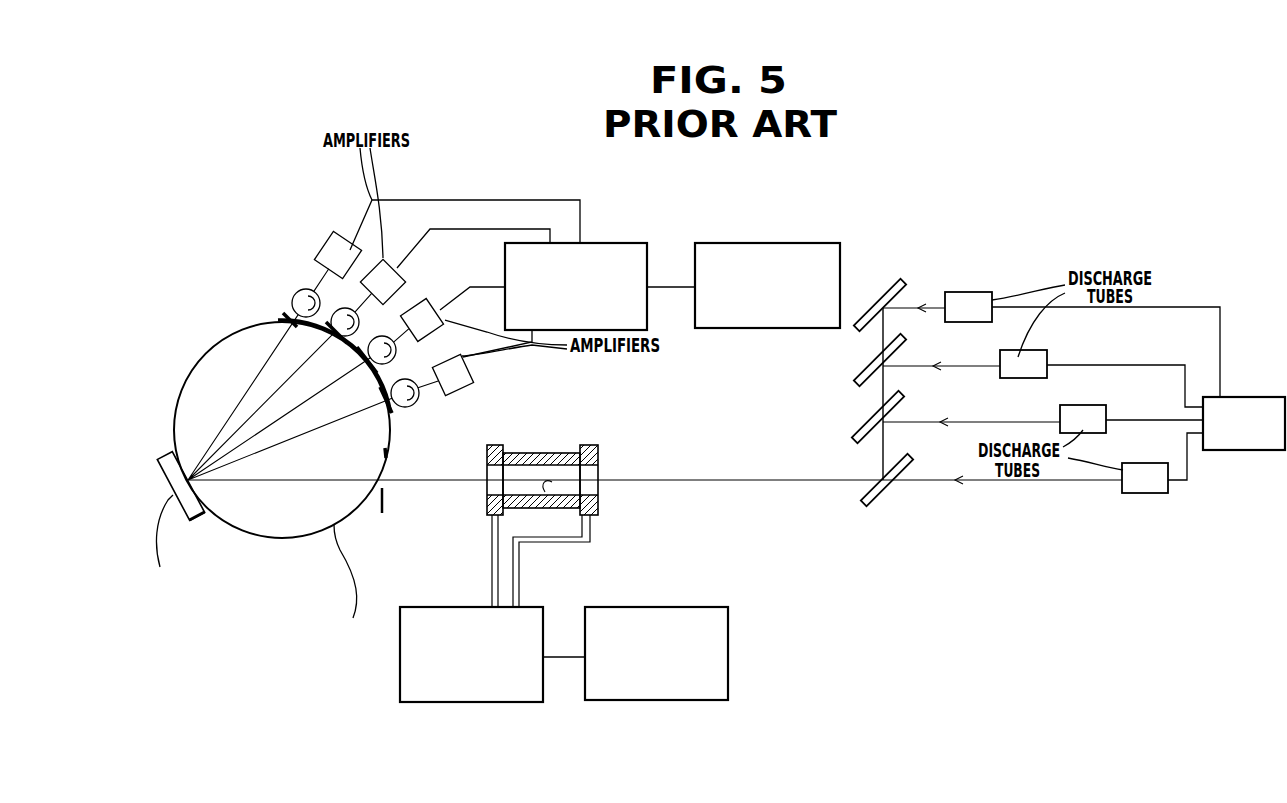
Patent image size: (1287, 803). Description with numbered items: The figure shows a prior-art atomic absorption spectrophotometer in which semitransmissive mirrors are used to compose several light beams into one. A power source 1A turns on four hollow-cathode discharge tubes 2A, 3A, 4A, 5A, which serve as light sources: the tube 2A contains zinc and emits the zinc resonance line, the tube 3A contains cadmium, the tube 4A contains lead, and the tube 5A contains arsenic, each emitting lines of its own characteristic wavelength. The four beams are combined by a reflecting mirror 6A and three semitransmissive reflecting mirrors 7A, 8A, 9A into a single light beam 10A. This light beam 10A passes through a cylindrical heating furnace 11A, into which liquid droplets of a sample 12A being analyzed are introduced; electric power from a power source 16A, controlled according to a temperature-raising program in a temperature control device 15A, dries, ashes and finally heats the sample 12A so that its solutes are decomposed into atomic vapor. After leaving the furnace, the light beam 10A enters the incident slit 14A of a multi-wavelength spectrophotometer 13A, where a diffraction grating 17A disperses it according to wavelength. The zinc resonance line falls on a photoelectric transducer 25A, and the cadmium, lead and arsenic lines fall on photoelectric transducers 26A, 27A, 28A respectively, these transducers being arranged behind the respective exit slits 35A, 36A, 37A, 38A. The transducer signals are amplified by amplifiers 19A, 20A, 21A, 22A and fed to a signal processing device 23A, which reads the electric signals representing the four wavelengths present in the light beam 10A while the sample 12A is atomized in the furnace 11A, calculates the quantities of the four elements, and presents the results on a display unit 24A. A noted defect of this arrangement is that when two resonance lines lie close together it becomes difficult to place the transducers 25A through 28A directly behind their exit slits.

The power source 1A is at (1260, 397).
The hollow-cathode discharge tube 2A is at (977, 291).
The hollow-cathode discharge tube 3A is at (1040, 350).
The hollow-cathode discharge tube 4A is at (1088, 405).
The hollow-cathode discharge tube 5A is at (1142, 494).
The reflecting mirror 6A is at (888, 281).
The semitransmissive reflecting mirror 7A is at (857, 372).
The semitransmissive reflecting mirror 8A is at (855, 424).
The semitransmissive reflecting mirror 9A is at (870, 503).
The light beam 10A is at (697, 482).
The cylindrical heating furnace 11A is at (567, 453).
The sample 12A is at (545, 490).
The multi-wavelength spectrophotometer 13A is at (303, 538).
The incident slit 14A is at (383, 500).
The temperature control device 15A is at (658, 702).
The power source 16A is at (473, 703).
The diffraction grating 17A is at (190, 523).
The amplifier 19A is at (331, 234).
The amplifier 20A is at (390, 254).
The amplifier 21A is at (438, 310).
The amplifier 22A is at (470, 357).
The signal processing device 23A is at (615, 243).
The display unit 24A is at (793, 243).
The photoelectric transducer 25A is at (294, 296).
The photoelectric transducer 26A is at (342, 308).
The photoelectric transducer 27A is at (394, 353).
The photoelectric transducer 28A is at (419, 400).
The exit slit 35A is at (283, 313).
The exit slit 36A is at (320, 333).
The exit slit 37A is at (380, 372).
The exit slit 38A is at (397, 415).